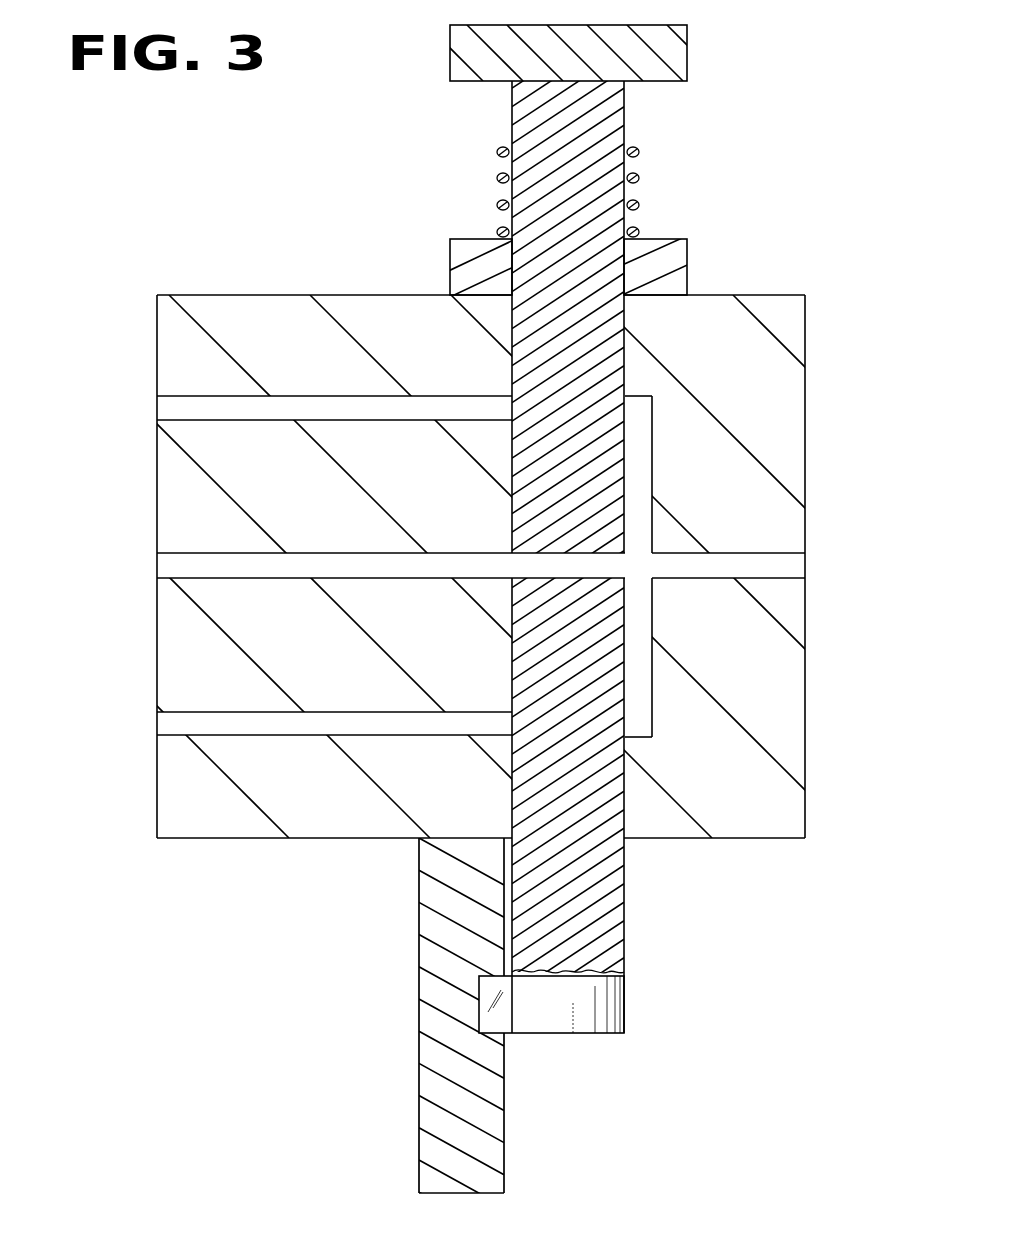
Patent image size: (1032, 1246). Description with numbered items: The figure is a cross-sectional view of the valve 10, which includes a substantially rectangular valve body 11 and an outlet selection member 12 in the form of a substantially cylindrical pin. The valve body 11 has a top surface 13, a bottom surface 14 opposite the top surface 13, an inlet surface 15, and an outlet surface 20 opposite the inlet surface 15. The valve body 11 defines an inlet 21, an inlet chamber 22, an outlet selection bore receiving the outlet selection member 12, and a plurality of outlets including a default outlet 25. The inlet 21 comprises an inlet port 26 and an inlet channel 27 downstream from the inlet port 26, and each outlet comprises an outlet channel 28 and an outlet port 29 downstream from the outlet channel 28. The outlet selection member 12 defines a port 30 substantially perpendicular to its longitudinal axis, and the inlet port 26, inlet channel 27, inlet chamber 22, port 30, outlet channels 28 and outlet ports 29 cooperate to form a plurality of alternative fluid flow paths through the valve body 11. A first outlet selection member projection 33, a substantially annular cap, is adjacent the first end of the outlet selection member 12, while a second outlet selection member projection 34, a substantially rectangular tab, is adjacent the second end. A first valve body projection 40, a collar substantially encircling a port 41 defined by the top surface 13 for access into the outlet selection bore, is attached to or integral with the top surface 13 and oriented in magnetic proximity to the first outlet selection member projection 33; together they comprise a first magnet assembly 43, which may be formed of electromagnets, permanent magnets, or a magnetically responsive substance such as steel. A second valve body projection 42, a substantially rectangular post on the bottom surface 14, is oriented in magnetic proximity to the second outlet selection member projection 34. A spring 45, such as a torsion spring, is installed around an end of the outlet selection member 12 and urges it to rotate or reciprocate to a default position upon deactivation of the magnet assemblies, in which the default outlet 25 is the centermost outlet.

The valve 10 is at (214, 152).
The valve body 11 is at (782, 330).
The outlet selection member 12 is at (626, 101).
The top surface 13 is at (313, 297).
The bottom surface 14 is at (222, 840).
The inlet surface 15 is at (804, 363).
The outlet surface 20 is at (143, 318).
The inlet 21 is at (768, 568).
The inlet chamber 22 is at (641, 625).
The default outlet 25 is at (237, 565).
The inlet port 26 is at (805, 566).
The inlet channel 27 is at (710, 568).
The outlet channel 28 is at (262, 413).
The outlet port 29 is at (152, 410).
The port 30 is at (548, 568).
The first outlet selection member projection 33 is at (688, 52).
The second outlet selection member projection 34 is at (500, 1016).
The first valve body projection 40 is at (687, 250).
The port 41 is at (627, 284).
The second valve body projection 42 is at (419, 1067).
The first magnet assembly 43 is at (450, 249).
The spring 45 is at (638, 181).